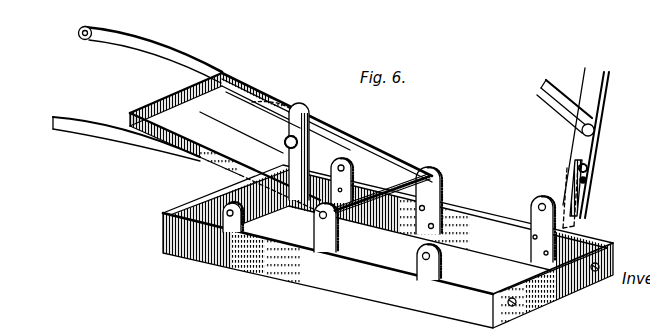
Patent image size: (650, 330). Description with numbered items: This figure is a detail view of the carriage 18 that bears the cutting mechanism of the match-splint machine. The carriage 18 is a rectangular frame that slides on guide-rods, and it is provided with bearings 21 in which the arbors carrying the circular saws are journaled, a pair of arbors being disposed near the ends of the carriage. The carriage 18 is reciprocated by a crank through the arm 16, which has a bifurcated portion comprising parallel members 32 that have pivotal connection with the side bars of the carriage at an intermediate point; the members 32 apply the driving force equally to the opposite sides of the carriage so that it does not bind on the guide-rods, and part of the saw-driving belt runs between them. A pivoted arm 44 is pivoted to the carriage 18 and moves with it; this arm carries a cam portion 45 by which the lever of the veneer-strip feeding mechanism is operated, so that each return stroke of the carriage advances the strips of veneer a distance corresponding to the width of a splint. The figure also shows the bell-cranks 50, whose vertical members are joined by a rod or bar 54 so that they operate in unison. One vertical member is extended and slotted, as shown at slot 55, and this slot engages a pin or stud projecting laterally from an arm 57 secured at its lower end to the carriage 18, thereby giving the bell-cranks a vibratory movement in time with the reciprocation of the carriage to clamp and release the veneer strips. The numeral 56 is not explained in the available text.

The arm 16 is at (143, 49).
The pivoted arm 44 is at (90, 133).
The cam portion 45 is at (223, 135).
The parallel members 32 is at (217, 165).
The carriage 18 is at (257, 293).
The bearings 21 is at (245, 215).
The bell-cranks 50 is at (610, 93).
The rod or bar 54 is at (552, 96).
The slot 55 is at (577, 200).
The pin 56 is at (593, 180).
The arm 57 is at (577, 225).